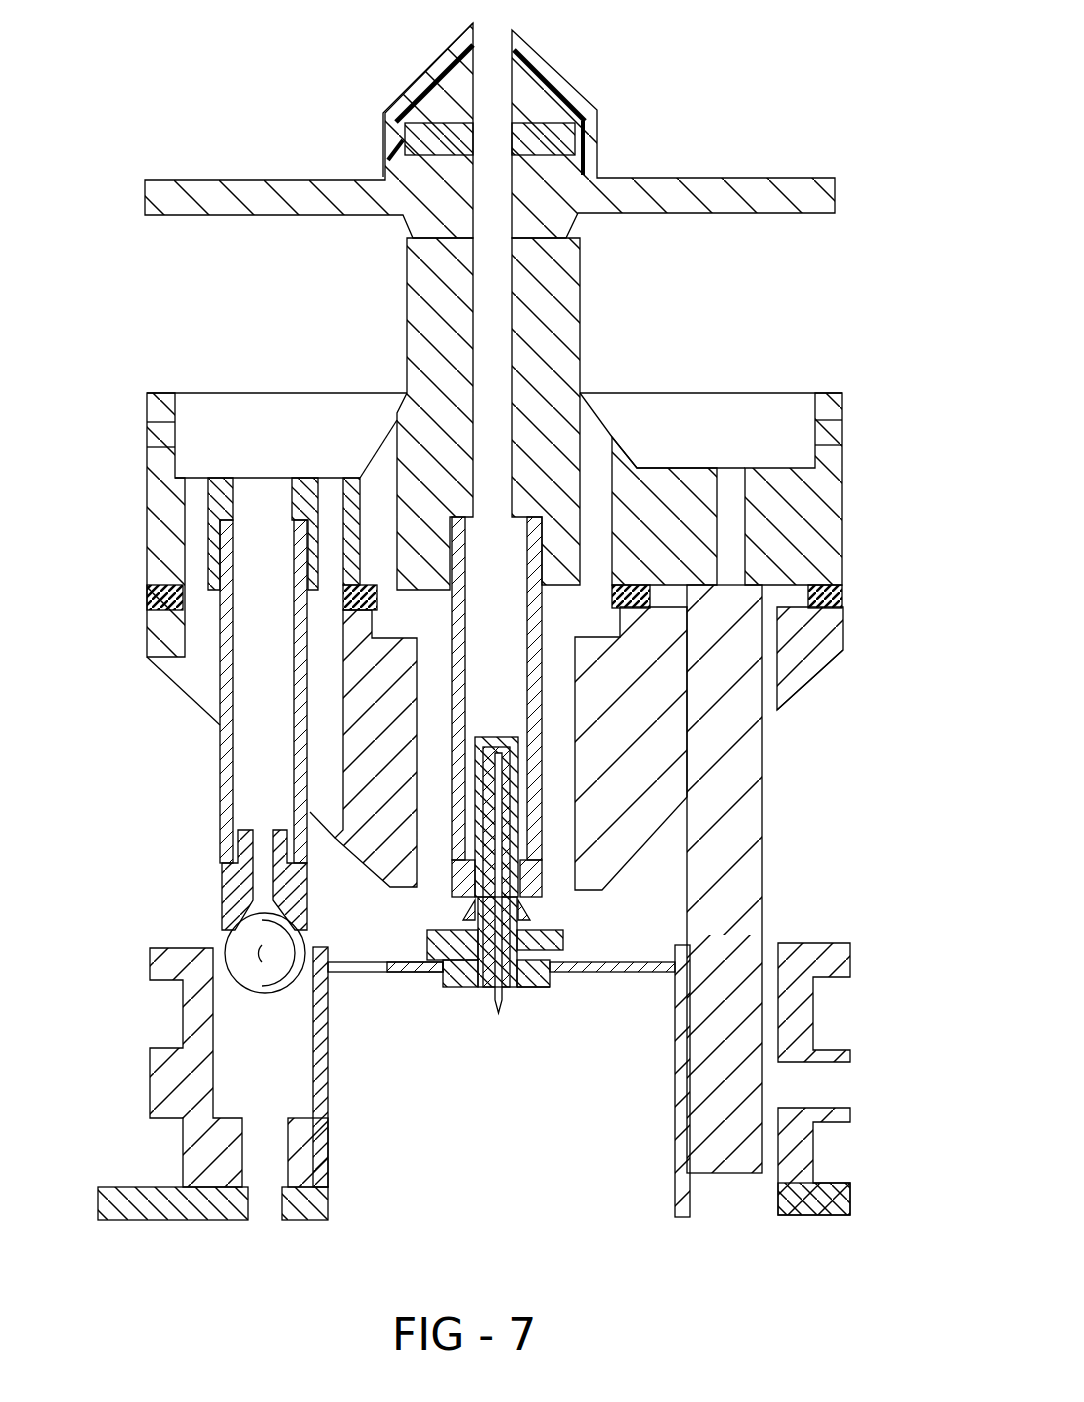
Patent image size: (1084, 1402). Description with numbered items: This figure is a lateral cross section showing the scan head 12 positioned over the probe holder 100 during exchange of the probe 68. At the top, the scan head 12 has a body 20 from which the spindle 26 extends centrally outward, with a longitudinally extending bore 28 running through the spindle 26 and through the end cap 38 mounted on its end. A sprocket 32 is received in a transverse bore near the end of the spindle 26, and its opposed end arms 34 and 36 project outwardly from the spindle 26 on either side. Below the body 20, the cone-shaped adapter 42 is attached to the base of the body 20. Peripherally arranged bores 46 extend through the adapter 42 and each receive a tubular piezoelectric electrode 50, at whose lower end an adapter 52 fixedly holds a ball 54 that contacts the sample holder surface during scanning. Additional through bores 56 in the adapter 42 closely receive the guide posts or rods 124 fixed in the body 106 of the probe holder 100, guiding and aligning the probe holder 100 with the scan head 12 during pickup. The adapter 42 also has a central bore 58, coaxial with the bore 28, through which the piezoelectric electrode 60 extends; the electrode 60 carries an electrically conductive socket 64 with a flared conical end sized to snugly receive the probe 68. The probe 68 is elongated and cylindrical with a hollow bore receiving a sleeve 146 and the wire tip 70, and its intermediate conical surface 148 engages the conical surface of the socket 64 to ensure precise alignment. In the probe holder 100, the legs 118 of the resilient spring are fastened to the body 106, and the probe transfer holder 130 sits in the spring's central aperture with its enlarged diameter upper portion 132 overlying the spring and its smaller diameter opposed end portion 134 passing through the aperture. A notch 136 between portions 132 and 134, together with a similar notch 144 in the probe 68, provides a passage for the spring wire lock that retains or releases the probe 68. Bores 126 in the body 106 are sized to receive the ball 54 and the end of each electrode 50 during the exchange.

The scan head 12 is at (130, 442).
The body 20 is at (832, 492).
The spindle 26 is at (566, 296).
The longitudinally extending bore 28 is at (515, 68).
The sprocket 32 is at (610, 190).
The end arm 34 is at (810, 185).
The end arm 36 is at (207, 190).
The end cap 38 is at (432, 80).
The cone-shaped adapter 42 is at (825, 640).
The bores 46 is at (195, 672).
The tubular piezoelectric electrode 50 is at (222, 752).
The adapter 52 is at (225, 885).
The ball 54 is at (237, 947).
The through bores 56 is at (778, 706).
The central bore 58 is at (420, 848).
The piezoelectric element or electrode 60 is at (540, 707).
The electrically conductive socket 64 is at (540, 778).
The probe 68 is at (478, 987).
The wire tip 70 is at (495, 1013).
The probe holder 100 is at (848, 1002).
The body 106 is at (818, 952).
The legs 118 is at (643, 983).
The guide posts or rods 124 is at (750, 795).
The bores 126 is at (214, 1020).
The probe transfer holder 130 is at (547, 983).
The enlarged diameter upper portion 132 is at (575, 930).
The smaller diameter opposed end portion 134 is at (523, 987).
The notch 136 is at (570, 947).
The notch 144 is at (527, 987).
The sleeve 146 is at (487, 780).
The conical surface 148 is at (590, 885).